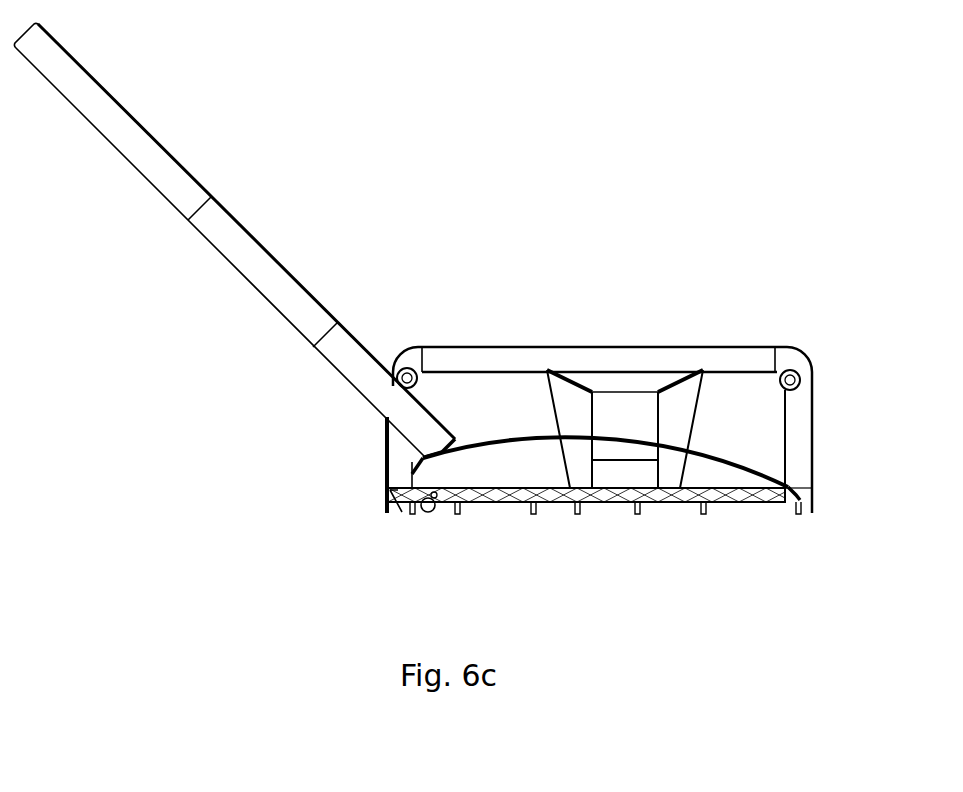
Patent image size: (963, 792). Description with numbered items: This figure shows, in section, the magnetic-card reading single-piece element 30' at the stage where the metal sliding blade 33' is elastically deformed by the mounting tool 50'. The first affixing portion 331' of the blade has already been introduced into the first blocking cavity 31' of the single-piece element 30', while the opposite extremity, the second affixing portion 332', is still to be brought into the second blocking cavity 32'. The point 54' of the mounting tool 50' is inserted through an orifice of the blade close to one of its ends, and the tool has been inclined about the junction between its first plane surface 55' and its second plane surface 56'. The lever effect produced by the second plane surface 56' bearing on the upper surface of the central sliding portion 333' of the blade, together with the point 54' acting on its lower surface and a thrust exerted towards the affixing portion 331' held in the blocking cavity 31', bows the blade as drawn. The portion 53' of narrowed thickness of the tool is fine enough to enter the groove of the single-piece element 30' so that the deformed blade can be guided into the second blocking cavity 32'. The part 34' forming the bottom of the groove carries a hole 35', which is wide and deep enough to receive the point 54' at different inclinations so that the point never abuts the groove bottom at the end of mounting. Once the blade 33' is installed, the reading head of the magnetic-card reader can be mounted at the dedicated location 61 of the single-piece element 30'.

The mounting tool 50' is at (235, 240).
The portion of narrowed thickness 53' is at (337, 378).
The second plane surface 56' is at (407, 370).
The first plane surface 55' is at (476, 368).
The point 54' is at (605, 515).
The magnetic-card reading single-piece element 30' is at (599, 399).
The metal sliding blade 33' is at (601, 383).
The central sliding portion 333' is at (625, 383).
The location 61 is at (635, 408).
The part forming the bottom of the groove 34' is at (586, 529).
The first blocking cavity 31' is at (821, 538).
The first affixing portion 331' is at (833, 476).
The second affixing portion 332' is at (363, 482).
The second blocking cavity 32' is at (390, 532).
The hole 35' is at (460, 533).